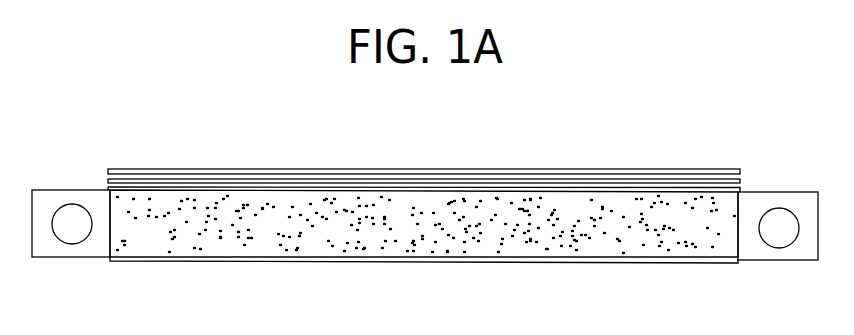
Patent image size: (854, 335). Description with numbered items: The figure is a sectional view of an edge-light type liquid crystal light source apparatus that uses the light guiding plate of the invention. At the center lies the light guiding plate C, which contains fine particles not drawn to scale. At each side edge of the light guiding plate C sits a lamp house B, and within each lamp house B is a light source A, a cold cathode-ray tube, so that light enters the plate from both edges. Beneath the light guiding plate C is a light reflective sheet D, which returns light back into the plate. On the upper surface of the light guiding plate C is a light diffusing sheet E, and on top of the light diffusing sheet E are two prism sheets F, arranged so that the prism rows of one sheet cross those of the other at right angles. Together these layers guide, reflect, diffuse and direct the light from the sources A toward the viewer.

The light source A is at (75, 241).
The lamp house B is at (32, 257).
The light guiding plate C is at (371, 258).
The light reflective sheet D is at (337, 263).
The light diffusing sheet E is at (386, 191).
The prism sheet F is at (285, 183).